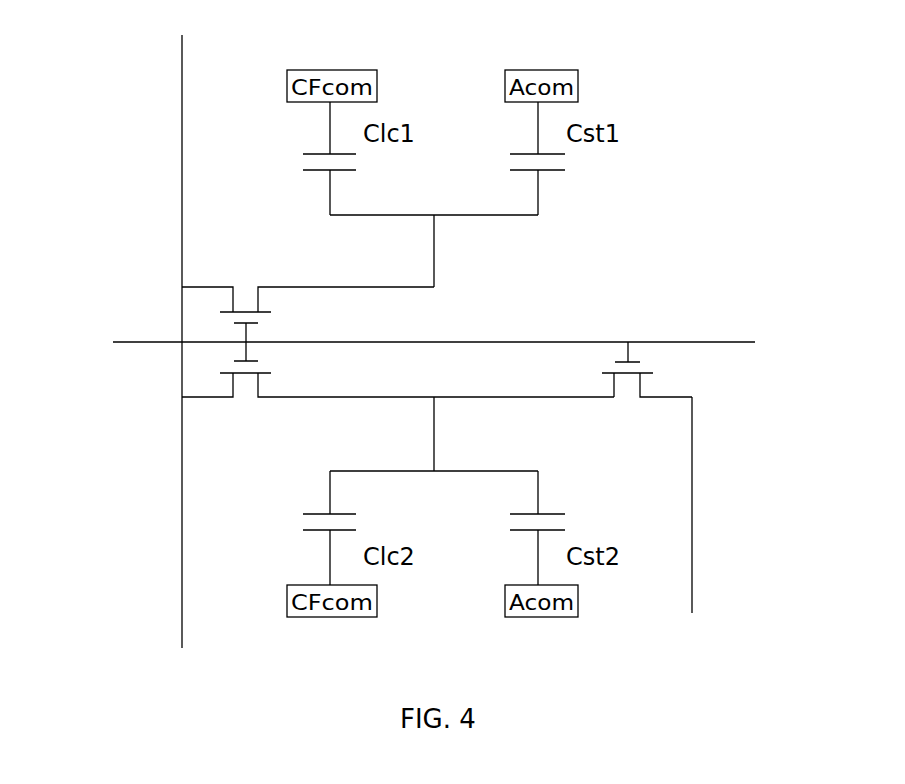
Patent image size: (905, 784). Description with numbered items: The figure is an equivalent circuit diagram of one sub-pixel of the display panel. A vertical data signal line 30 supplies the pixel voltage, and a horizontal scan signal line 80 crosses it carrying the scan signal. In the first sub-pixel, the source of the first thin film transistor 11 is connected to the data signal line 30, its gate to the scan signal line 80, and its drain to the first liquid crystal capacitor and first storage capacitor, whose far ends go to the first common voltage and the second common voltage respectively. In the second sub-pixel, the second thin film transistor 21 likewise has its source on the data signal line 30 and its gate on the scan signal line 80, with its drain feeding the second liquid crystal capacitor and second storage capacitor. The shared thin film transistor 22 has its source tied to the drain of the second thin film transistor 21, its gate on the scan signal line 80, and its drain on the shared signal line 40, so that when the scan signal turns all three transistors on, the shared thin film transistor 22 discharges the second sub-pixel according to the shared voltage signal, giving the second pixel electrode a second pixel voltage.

The data signal line 30 is at (182, 82).
The scan signal line 80 is at (703, 342).
The shared signal line 40 is at (692, 530).
The first thin film transistor 11 is at (248, 285).
The second thin film transistor 21 is at (248, 405).
The shared thin film transistor 22 is at (630, 403).